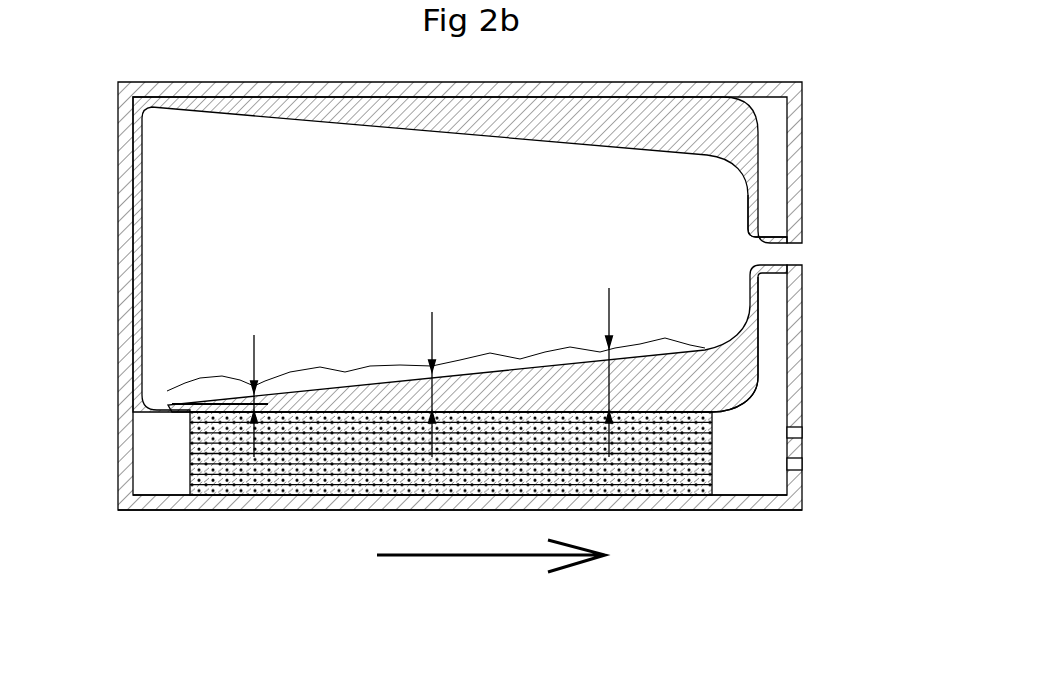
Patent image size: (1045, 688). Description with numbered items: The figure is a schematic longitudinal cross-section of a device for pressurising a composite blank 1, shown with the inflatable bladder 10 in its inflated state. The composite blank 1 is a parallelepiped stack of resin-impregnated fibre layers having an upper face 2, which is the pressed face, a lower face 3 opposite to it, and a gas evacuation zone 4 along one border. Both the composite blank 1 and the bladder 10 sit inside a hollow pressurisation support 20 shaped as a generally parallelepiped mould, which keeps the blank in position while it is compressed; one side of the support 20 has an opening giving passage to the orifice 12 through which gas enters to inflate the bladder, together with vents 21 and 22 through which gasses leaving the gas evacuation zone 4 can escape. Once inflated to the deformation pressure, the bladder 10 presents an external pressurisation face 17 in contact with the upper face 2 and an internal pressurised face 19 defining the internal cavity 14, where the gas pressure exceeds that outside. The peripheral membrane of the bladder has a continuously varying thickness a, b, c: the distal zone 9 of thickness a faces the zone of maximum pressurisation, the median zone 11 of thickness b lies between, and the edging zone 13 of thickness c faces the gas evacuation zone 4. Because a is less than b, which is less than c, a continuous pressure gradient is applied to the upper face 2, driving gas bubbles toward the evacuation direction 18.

The composite blank 1 is at (212, 457).
The upper face 2 is at (283, 410).
The lower face 3 is at (262, 503).
The gas evacuation zone 4 is at (723, 457).
The distal zone 9 is at (245, 371).
The inflatable bladder 10 is at (768, 125).
The median zone 11 is at (415, 357).
The orifice 12 is at (822, 253).
The edging zone 13 is at (620, 342).
The internal cavity 14 is at (640, 245).
The external pressurisation face 17 is at (240, 414).
The evacuation direction 18 is at (460, 556).
The internal pressurised face 19 is at (362, 125).
The pressurisation support 20 is at (127, 222).
The vent 21 is at (810, 430).
The vent 22 is at (810, 462).
The thickness a is at (243, 396).
The thickness b is at (420, 384).
The thickness c is at (599, 372).